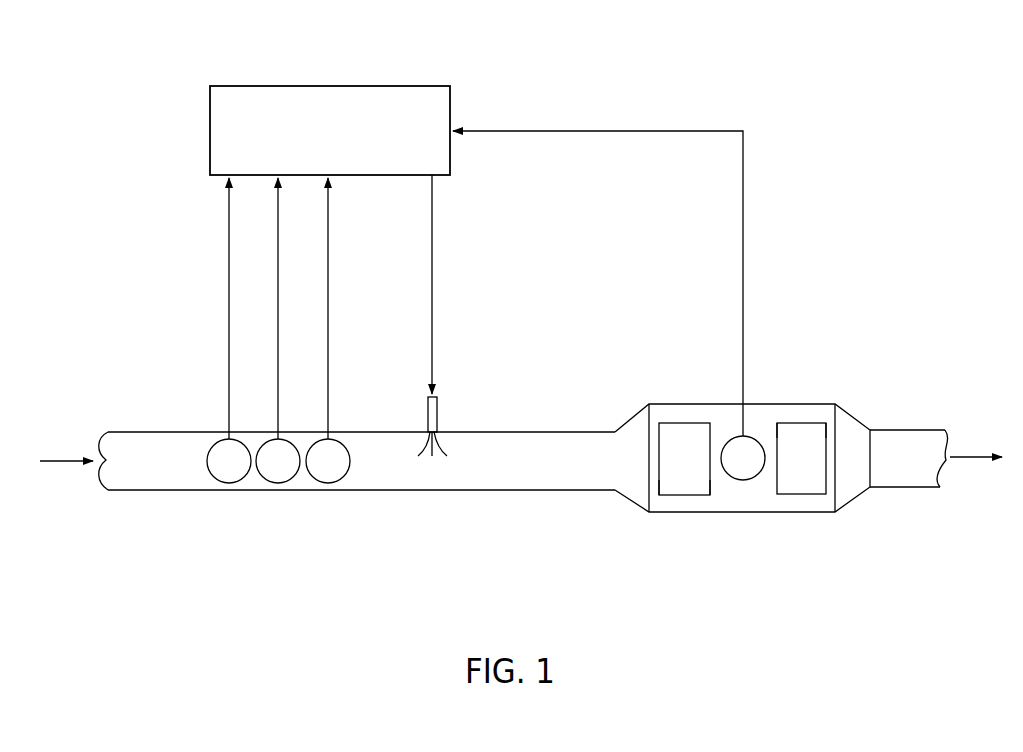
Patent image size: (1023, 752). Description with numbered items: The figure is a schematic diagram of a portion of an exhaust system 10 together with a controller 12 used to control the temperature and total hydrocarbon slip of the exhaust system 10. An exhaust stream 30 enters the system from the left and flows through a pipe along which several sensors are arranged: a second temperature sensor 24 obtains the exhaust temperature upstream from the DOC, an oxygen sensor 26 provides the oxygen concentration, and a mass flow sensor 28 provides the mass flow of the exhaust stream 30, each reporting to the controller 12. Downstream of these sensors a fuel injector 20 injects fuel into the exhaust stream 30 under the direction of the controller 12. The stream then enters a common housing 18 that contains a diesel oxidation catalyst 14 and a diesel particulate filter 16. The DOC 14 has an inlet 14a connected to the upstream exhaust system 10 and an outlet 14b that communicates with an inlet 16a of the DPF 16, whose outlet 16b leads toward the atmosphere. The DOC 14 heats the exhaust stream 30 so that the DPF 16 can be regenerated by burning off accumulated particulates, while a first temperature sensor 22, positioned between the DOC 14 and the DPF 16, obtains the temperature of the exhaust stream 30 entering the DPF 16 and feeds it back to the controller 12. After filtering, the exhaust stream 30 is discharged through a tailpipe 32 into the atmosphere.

The exhaust system 10 is at (521, 308).
The controller 12 is at (328, 85).
The diesel oxidation catalyst 14 is at (688, 496).
The inlet 14a is at (659, 483).
The outlet 14b is at (711, 483).
The diesel particulate filter 16 is at (803, 495).
The inlet 16a is at (777, 432).
The outlet 16b is at (832, 432).
The common housing 18 is at (775, 513).
The fuel injector 20 is at (437, 404).
The first temperature sensor 22 is at (740, 438).
The second temperature sensor 24 is at (229, 483).
The oxygen sensor 26 is at (278, 483).
The mass flow sensor 28 is at (328, 483).
The exhaust stream 30 is at (62, 460).
The tailpipe 32 is at (895, 489).